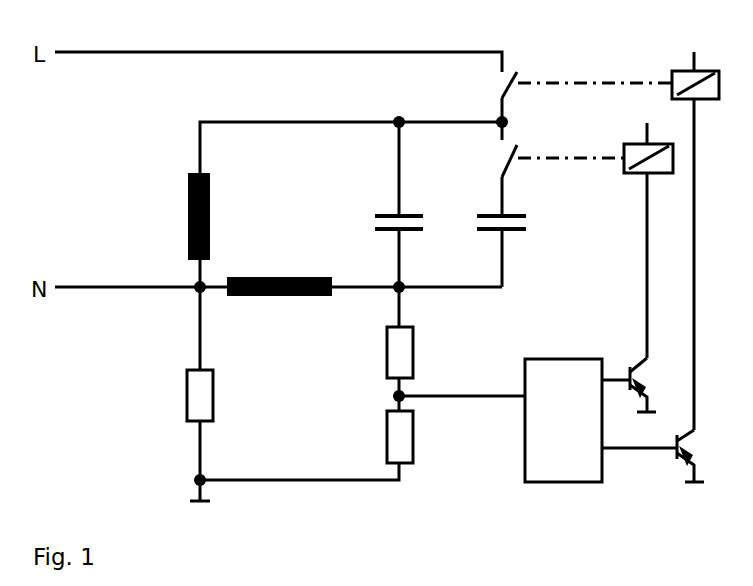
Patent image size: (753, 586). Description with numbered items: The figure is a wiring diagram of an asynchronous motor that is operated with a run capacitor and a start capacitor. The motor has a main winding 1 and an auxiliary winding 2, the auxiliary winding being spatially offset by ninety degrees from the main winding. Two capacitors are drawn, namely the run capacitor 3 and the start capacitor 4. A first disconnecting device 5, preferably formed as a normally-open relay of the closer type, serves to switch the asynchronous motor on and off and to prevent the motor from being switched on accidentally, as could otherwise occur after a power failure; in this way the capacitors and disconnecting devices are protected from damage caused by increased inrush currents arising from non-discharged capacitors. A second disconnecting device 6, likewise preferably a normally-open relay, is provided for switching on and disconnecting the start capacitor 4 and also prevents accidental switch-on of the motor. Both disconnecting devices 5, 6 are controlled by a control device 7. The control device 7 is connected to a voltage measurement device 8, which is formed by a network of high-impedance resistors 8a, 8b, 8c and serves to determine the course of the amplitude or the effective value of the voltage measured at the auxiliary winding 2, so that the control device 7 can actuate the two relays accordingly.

The main winding 1 is at (188, 212).
The auxiliary winding 2 is at (280, 275).
The run capacitor 3 is at (415, 230).
The start capacitor 4 is at (517, 230).
The first disconnecting device 5 is at (687, 75).
The second disconnecting device 6 is at (658, 158).
The control device 7 is at (567, 435).
The voltage measurement device 8 is at (412, 495).
The high-impedance resistor 8a is at (187, 395).
The high-impedance resistor 8b is at (385, 357).
The high-impedance resistor 8c is at (387, 437).